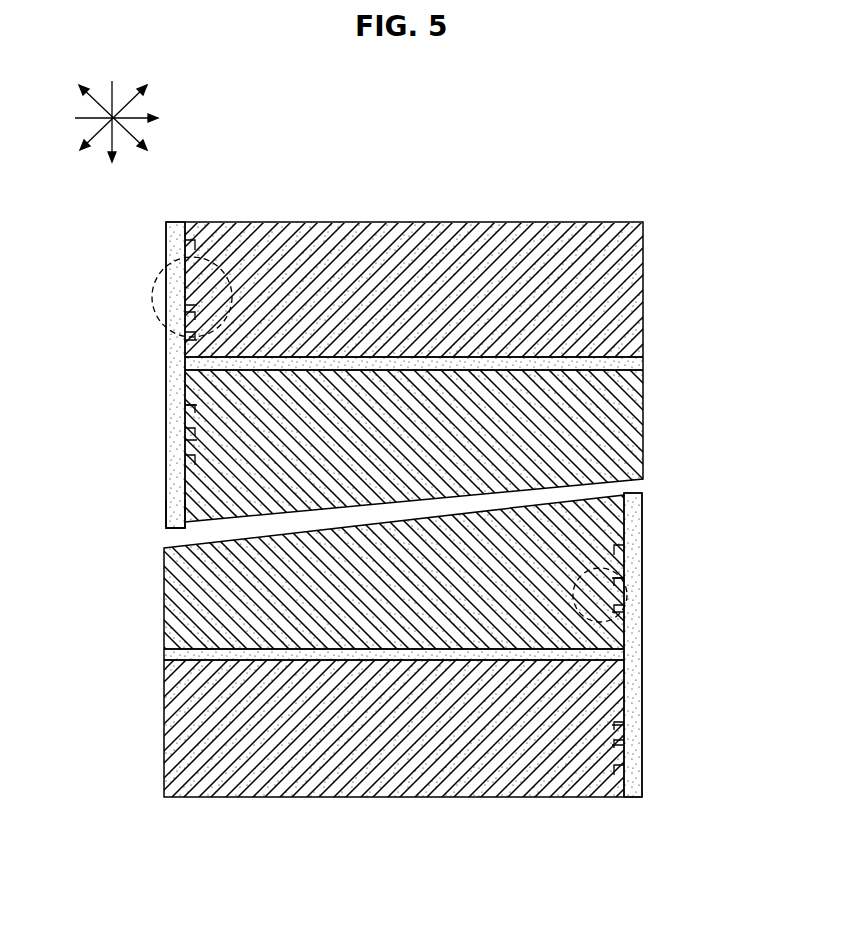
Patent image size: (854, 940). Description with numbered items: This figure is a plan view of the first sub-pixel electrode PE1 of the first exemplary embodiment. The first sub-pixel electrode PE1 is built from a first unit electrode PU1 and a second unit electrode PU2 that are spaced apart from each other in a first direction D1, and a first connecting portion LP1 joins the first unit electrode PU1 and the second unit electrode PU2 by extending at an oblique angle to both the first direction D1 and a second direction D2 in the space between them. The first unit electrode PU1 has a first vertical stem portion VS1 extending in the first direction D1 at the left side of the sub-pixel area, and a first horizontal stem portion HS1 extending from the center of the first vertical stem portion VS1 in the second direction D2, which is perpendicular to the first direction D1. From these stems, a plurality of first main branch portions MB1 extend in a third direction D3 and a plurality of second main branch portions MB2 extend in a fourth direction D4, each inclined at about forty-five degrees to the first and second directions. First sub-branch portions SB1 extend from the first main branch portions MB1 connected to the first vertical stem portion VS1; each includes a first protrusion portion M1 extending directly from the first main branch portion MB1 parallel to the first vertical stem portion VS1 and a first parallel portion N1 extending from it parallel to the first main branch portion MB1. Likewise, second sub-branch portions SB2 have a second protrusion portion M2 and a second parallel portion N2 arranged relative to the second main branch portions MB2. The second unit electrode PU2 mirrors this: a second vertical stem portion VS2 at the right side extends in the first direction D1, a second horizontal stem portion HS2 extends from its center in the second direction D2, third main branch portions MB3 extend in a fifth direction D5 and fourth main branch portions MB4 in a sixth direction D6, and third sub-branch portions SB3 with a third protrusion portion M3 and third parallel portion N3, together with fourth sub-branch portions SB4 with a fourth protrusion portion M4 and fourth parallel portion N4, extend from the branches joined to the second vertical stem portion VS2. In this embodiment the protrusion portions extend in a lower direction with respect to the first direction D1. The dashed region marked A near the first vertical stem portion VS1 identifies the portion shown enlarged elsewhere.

The first sub-pixel electrode PE1 is at (279, 159).
The first unit electrode PU1 is at (55, 268).
The second unit electrode PU2 is at (738, 545).
The first vertical stem portion VS1 is at (180, 368).
The second vertical stem portion VS2 is at (628, 657).
The first horizontal stem portion HS1 is at (643, 364).
The second horizontal stem portion HS2 is at (178, 655).
The first connecting portion LP1 is at (200, 511).
The first main branch portions MB1 is at (187, 284).
The second main branch portions MB2 is at (195, 460).
The third main branch portions MB3 is at (630, 553).
The fourth main branch portions MB4 is at (628, 770).
The first sub-branch portions SB1 is at (105, 305).
The second sub-branch portions SB2 is at (105, 400).
The third sub-branch portions SB3 is at (690, 575).
The fourth sub-branch portions SB4 is at (690, 695).
The first protrusion portion M1 is at (193, 318).
The first parallel portion N1 is at (195, 337).
The second protrusion portion M2 is at (193, 410).
The second parallel portion N2 is at (195, 432).
The third protrusion portion M3 is at (626, 580).
The third parallel portion N3 is at (628, 613).
The fourth protrusion portion M4 is at (630, 728).
The fourth parallel portion N4 is at (628, 743).
The portion A is at (213, 258).
The first direction D1 is at (113, 132).
The second direction D2 is at (129, 119).
The third direction D3 is at (122, 108).
The fourth direction D4 is at (152, 154).
The fifth direction D5 is at (105, 108).
The sixth direction D6 is at (74, 152).